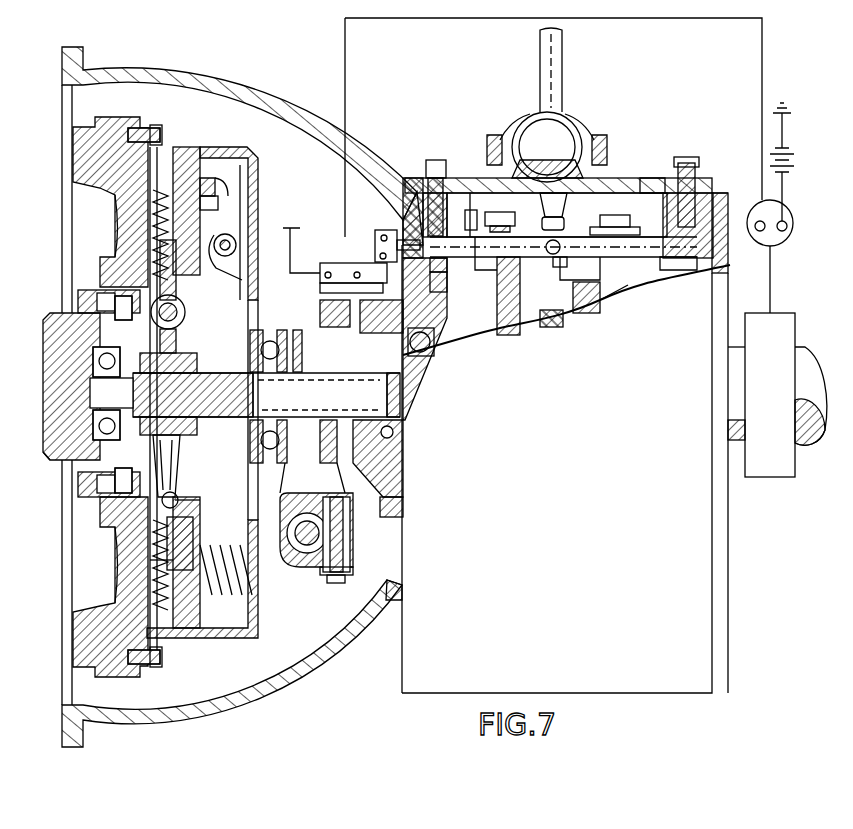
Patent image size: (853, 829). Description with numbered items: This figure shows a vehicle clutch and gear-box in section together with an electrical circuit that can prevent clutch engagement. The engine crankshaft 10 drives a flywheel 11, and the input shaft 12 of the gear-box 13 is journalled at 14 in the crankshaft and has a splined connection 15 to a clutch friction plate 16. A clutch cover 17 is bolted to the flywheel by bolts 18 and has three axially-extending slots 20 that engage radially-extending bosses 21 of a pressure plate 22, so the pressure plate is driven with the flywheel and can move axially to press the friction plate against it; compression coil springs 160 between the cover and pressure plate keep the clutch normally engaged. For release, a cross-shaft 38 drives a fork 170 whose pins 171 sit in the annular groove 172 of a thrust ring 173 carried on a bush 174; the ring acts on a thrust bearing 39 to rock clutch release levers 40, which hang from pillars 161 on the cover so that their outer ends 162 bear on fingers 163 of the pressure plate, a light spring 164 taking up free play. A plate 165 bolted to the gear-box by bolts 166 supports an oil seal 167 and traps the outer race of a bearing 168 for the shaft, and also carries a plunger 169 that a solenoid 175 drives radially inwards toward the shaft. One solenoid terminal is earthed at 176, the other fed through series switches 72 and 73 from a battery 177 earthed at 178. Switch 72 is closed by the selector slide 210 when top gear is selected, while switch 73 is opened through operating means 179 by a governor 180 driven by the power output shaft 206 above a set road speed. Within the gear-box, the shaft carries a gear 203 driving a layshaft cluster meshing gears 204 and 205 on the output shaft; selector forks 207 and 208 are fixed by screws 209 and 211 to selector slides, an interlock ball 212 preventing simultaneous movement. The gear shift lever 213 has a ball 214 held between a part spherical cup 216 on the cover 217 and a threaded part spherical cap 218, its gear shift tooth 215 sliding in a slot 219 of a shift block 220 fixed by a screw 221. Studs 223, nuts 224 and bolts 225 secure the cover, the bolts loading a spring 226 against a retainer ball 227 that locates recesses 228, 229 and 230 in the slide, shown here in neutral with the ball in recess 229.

The crankshaft 10 is at (50, 465).
The flywheel 11 is at (72, 155).
The input shaft 12 is at (266, 394).
The gear-box 13 is at (560, 518).
The journal 14 is at (60, 358).
The splined connection 15 is at (198, 440).
The clutch friction plate 16 is at (148, 572).
The clutch cover 17 is at (192, 638).
The bolts 18 is at (160, 128).
The axially-extending slots 20 is at (162, 152).
The radially-extending bosses 21 is at (195, 148).
The pressure plate 22 is at (182, 600).
The cross-shaft 38 is at (307, 550).
The thrust bearing 39 is at (270, 340).
The clutch release levers 40 is at (240, 342).
The switch 72 is at (380, 240).
The switch 73 is at (794, 220).
The compression coil springs 160 is at (232, 548).
The pillars 161 is at (262, 232).
The outer ends 162 is at (215, 205).
The fingers 163 is at (224, 190).
The light spring 164 is at (233, 262).
The plate 165 is at (395, 468).
The bolts 166 is at (400, 508).
The oil seal 167 is at (394, 436).
The bearing 168 is at (455, 352).
The plunger 169 is at (322, 312).
The fork 170 is at (320, 497).
The pins 171 is at (320, 394).
The annular groove 172 is at (285, 467).
The thrust ring 173 is at (338, 462).
The bush 174 is at (263, 423).
The solenoid 175 is at (332, 267).
The earth connection 176 is at (287, 222).
The battery 177 is at (793, 160).
The earth connection 178 is at (789, 110).
The operating means 179 is at (772, 290).
The governor 180 is at (785, 388).
The gear 203 is at (528, 330).
The gear 204 is at (555, 330).
The gear 205 is at (600, 310).
The power output shaft 206 is at (800, 445).
The selector fork 207 is at (520, 345).
The selector fork 208 is at (627, 287).
The screw 209 is at (525, 232).
The selector slide 210 is at (468, 237).
The screw 211 is at (615, 228).
The interlock ball 212 is at (675, 258).
The gear shift lever 213 is at (563, 56).
The ball 214 is at (563, 162).
The gear shift tooth 215 is at (600, 188).
The part spherical cup 216 is at (603, 140).
The cover 217 is at (663, 178).
The part spherical cap 218 is at (494, 138).
The slot 219 is at (567, 226).
The shift block 220 is at (535, 252).
The screw 221 is at (560, 280).
The studs 223 is at (708, 190).
The nuts 224 is at (690, 160).
The bolts 225 is at (434, 170).
The spring 226 is at (425, 215).
The retainer ball 227 is at (400, 236).
The recess 228 is at (438, 274).
The recess 229 is at (440, 298).
The recess 230 is at (434, 338).